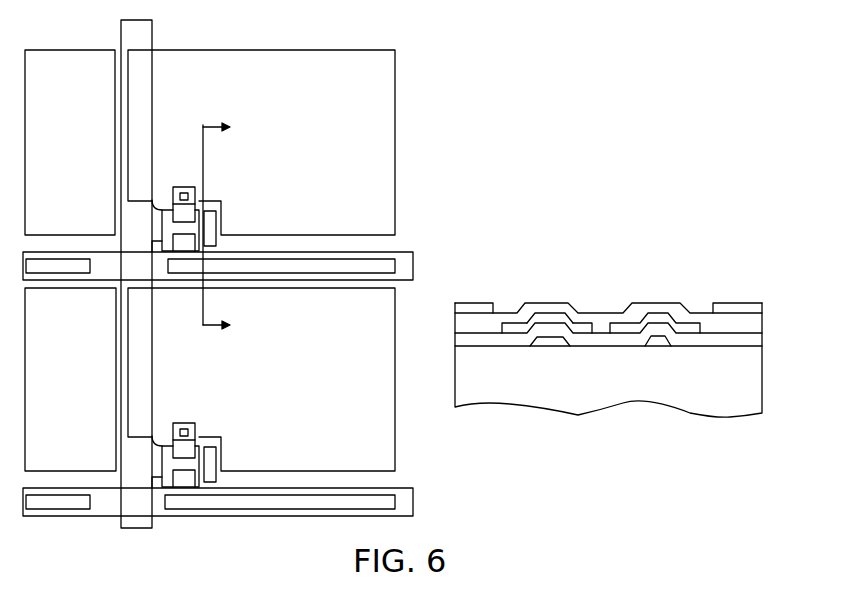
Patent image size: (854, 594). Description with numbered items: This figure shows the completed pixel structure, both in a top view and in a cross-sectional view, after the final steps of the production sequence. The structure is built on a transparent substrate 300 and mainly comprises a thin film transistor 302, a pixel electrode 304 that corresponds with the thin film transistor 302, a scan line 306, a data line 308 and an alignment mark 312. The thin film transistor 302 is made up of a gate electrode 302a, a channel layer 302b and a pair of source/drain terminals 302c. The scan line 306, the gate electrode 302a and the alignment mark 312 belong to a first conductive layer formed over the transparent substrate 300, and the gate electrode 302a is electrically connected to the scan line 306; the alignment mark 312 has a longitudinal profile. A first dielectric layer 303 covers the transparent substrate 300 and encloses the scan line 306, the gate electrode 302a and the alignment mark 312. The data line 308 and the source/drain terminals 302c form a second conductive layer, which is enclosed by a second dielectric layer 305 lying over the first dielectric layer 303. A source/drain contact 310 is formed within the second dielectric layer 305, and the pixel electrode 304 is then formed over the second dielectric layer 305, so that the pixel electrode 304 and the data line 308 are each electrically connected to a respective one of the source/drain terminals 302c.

The transparent substrate 300 is at (745, 390).
The thin film transistor 302 is at (378, 324).
The gate electrode 302a is at (218, 219).
The channel layer 302b is at (211, 203).
The source/drain terminals 302c is at (208, 192).
The first dielectric layer 303 is at (752, 340).
The pixel electrode 304 is at (361, 63).
The second dielectric layer 305 is at (753, 322).
The scan line 306 is at (143, 33).
The data line 308 is at (405, 262).
The source/drain contact 310 is at (187, 186).
The alignment mark 312 is at (392, 262).